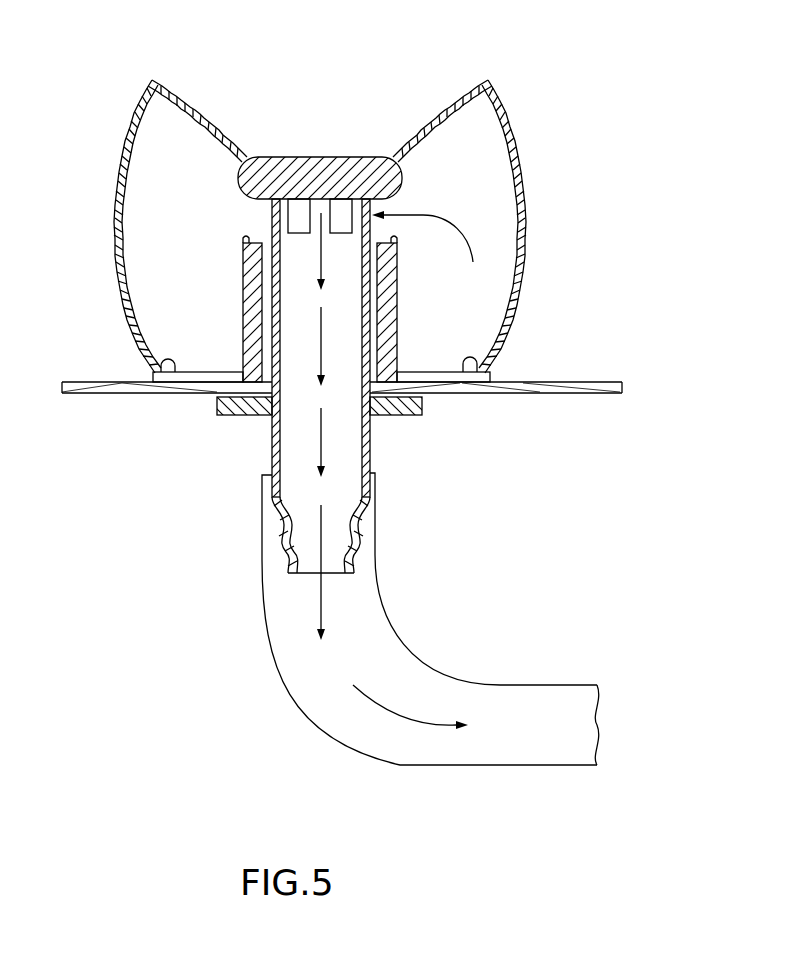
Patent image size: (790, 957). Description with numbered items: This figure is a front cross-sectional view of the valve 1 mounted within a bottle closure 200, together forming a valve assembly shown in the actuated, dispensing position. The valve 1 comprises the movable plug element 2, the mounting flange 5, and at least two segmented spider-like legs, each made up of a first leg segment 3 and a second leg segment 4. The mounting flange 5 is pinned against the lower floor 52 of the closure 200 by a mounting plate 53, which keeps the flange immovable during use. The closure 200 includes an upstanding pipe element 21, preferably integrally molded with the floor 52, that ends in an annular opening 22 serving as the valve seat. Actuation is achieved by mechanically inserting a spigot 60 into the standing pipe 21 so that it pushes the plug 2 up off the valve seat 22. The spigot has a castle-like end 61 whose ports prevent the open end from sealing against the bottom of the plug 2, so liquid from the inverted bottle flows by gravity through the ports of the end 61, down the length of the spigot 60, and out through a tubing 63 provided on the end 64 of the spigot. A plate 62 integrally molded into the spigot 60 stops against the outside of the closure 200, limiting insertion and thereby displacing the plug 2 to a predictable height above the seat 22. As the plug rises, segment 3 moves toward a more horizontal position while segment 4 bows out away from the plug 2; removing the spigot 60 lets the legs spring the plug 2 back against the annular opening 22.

The valve 1 is at (568, 62).
The movable plug element 2 is at (318, 165).
The first leg segment 3 is at (448, 104).
The second leg segment 4 is at (515, 150).
The mounting flange 5 is at (463, 382).
The upstanding pipe element 21 is at (243, 283).
The annular opening 22 is at (253, 234).
The lower floor 52 is at (553, 394).
The mounting plate 53 is at (482, 364).
The spigot 60 is at (272, 447).
The castle-like end 61 is at (298, 213).
The plate 62 is at (204, 408).
The tubing 63 is at (283, 680).
The end of the spigot 64 is at (285, 552).
The closure 200 is at (605, 312).